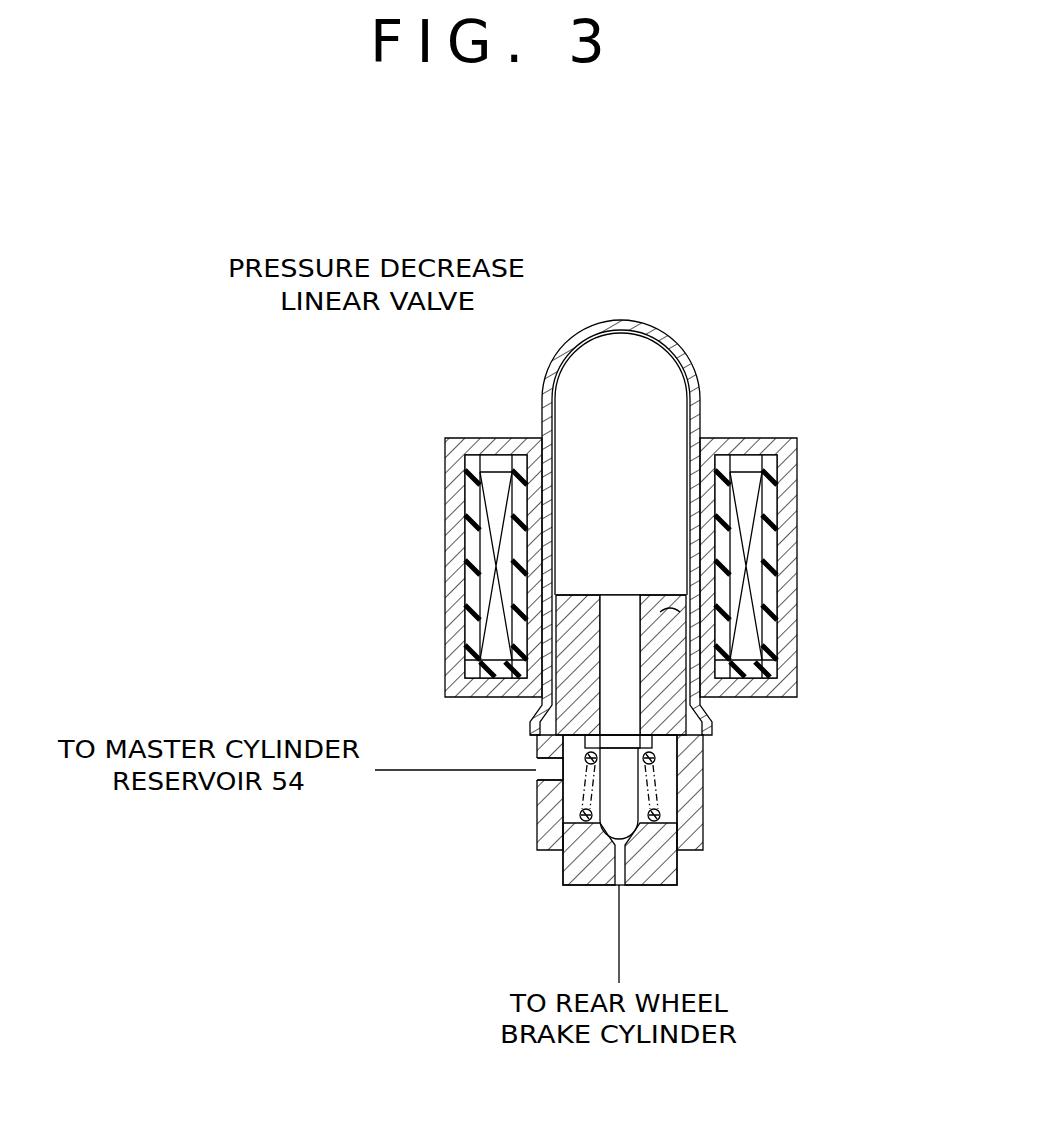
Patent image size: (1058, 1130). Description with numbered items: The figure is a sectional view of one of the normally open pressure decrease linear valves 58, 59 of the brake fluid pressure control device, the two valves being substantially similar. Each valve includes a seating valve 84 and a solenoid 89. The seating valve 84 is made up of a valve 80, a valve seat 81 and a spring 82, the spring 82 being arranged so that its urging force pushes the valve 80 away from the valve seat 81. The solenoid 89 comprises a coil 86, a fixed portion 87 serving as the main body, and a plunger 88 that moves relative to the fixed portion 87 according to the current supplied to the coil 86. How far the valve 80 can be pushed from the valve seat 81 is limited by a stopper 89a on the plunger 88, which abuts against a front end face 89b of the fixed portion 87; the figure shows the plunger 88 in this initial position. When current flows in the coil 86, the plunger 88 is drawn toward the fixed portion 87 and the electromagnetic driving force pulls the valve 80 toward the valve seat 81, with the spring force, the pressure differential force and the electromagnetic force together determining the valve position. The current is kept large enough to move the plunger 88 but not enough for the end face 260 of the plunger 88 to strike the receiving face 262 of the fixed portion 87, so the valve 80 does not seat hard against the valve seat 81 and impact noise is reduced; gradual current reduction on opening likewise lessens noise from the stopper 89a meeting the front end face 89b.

The pressure decrease linear valve 58 is at (508, 388).
The pressure decrease linear valve 59 is at (636, 638).
The coil 86 is at (482, 538).
The solenoid 89 is at (862, 592).
The receiving face 262 is at (552, 594).
The end face 260 is at (655, 612).
The plunger 88 is at (624, 694).
The fixed portion 87 is at (698, 752).
The front end face 89b is at (540, 750).
The stopper 89a is at (537, 800).
The seating valve 84 is at (742, 846).
The spring 82 is at (668, 818).
The valve 80 is at (590, 885).
The valve seat 81 is at (651, 885).